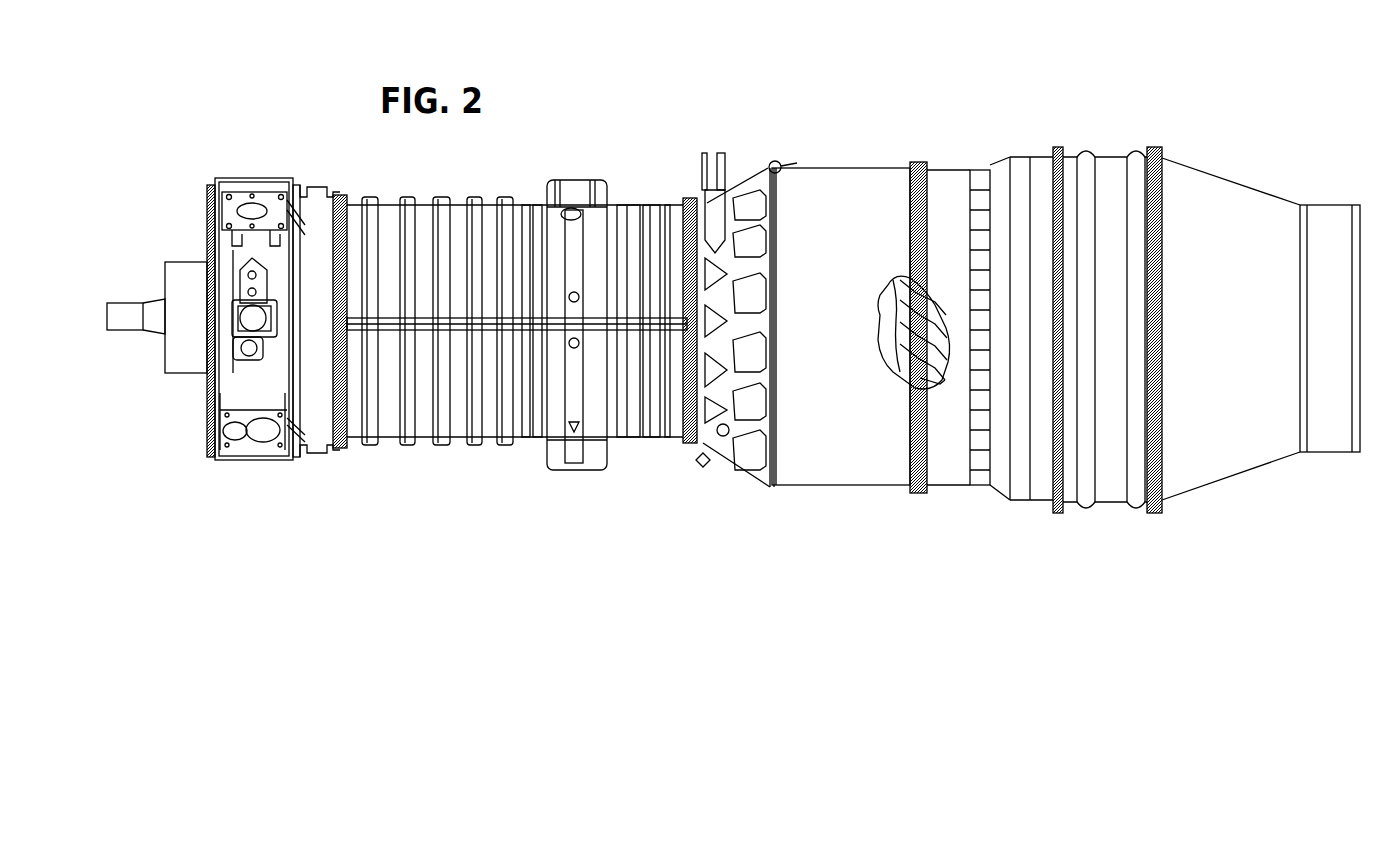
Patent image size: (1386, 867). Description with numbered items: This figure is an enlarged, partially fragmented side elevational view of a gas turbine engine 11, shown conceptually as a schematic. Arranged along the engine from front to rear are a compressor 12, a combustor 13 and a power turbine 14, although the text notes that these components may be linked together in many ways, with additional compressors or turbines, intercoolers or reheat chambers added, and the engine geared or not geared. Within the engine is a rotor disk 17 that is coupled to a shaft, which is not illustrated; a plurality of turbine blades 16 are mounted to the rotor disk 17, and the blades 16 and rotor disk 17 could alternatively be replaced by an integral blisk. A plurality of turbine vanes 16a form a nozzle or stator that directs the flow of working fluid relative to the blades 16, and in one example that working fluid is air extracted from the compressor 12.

The gas turbine engine 11 is at (1255, 110).
The compressor 12 is at (428, 442).
The combustor 13 is at (865, 170).
The power turbine 14 is at (1110, 157).
The turbine blades 16 is at (932, 290).
The turbine vanes 16a is at (878, 380).
The rotor disk 17 is at (940, 386).